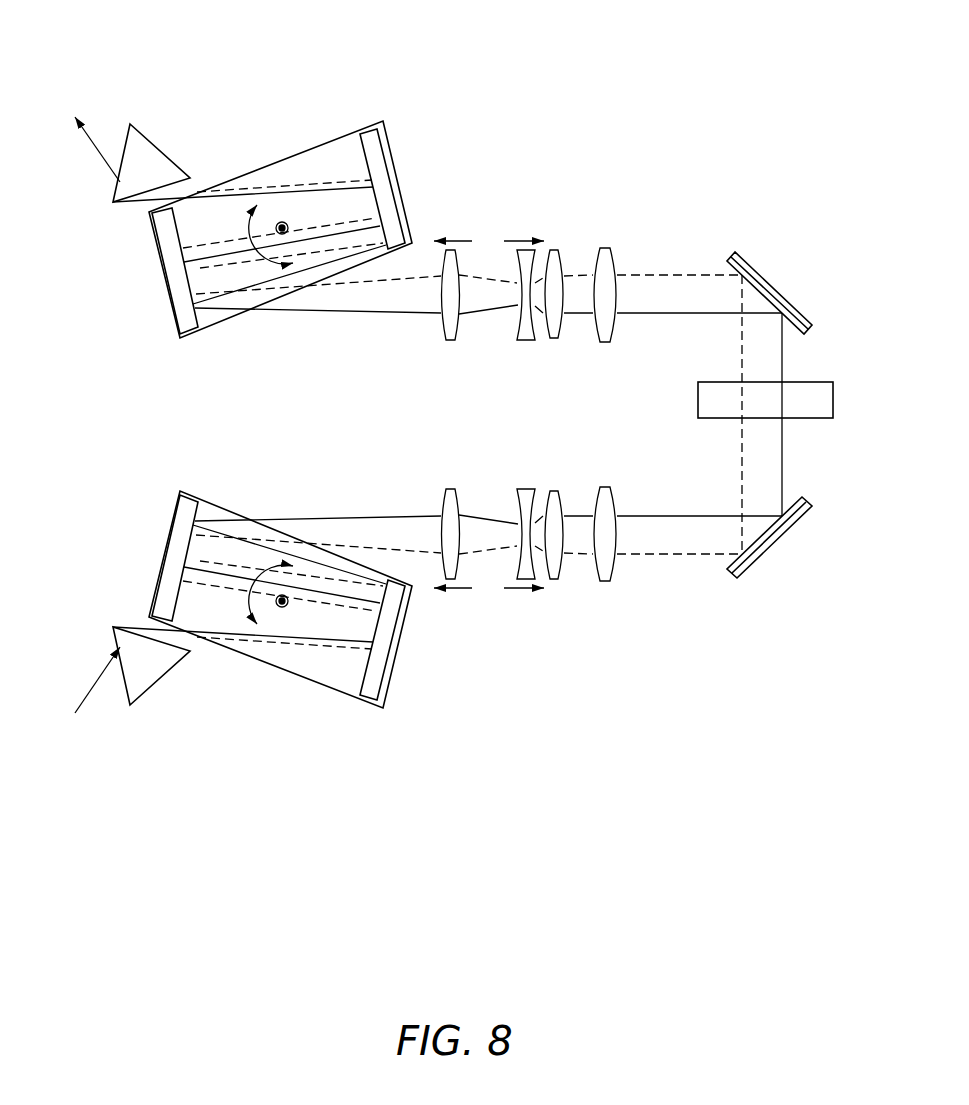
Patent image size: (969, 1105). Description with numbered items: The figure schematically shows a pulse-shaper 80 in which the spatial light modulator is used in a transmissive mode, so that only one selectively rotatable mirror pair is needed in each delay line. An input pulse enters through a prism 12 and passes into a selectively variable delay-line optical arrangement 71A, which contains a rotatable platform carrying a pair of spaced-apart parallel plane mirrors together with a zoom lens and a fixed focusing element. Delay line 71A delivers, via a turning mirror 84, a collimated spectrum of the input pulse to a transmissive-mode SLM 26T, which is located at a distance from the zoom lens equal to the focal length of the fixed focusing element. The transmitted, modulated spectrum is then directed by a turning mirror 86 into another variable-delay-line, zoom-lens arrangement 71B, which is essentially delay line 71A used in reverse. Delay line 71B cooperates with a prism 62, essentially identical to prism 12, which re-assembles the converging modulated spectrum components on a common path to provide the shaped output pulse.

The pulse-shaper 80 is at (448, 505).
The selectively variable delay-line optical arrangement 71A is at (422, 655).
The variable-delay-line, zoom-lens arrangement 71B is at (428, 187).
The prism 62 is at (150, 143).
The prism 12 is at (150, 687).
The turning mirror 86 is at (762, 290).
The turning mirror 84 is at (762, 537).
The transmissive-mode SLM 26T is at (745, 426).